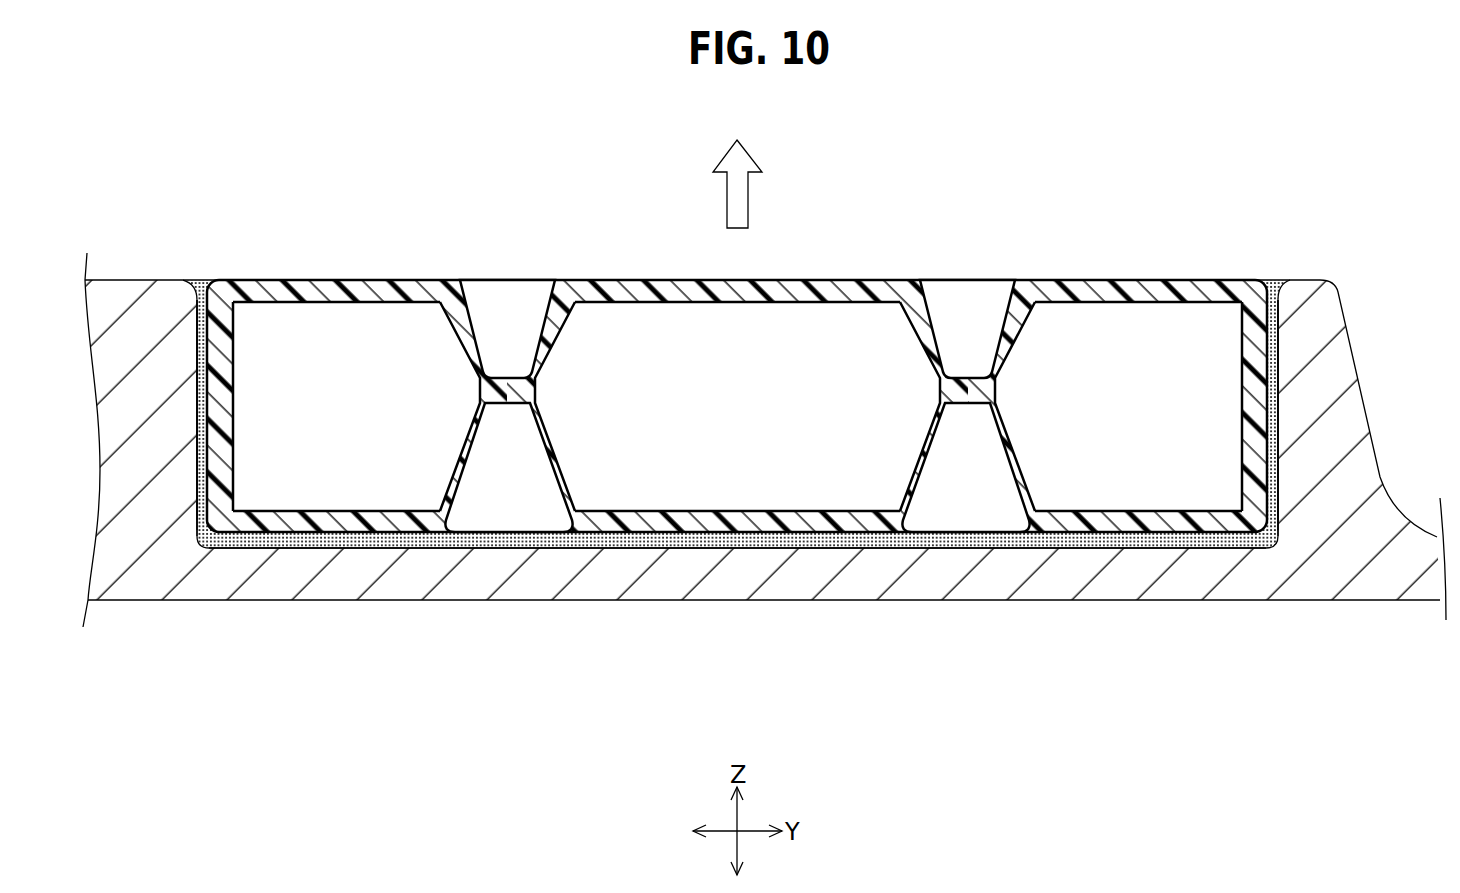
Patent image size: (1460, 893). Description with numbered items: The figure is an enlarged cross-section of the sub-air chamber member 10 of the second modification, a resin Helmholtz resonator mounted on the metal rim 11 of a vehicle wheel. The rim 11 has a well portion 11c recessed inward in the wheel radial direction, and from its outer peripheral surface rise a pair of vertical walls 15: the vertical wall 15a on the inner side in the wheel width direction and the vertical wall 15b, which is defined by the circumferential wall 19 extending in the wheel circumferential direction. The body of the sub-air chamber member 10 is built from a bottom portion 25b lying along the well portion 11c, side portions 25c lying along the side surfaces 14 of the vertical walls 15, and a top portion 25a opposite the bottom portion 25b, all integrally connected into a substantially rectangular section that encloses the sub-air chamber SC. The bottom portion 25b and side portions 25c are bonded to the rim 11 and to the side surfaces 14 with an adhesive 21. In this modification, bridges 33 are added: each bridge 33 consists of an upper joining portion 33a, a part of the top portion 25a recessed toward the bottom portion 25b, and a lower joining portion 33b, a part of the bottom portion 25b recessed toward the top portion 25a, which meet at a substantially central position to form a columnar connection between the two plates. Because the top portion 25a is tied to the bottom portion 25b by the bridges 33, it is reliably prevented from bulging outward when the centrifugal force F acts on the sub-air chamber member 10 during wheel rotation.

The sub-air chamber member 10 is at (1035, 253).
The rim 11 is at (130, 290).
The well portion 11c is at (760, 543).
The side surfaces 14 is at (197, 487).
The vertical walls 15 is at (737, 415).
The vertical wall 15a is at (200, 345).
The vertical wall 15b is at (1270, 347).
The circumferential wall 19 is at (1337, 365).
The adhesive 21 is at (695, 547).
The top portion 25a is at (318, 293).
The bottom portion 25b is at (333, 520).
The side portions 25c is at (220, 412).
The bridge 33 is at (663, 227).
The upper joining portion 33a is at (572, 302).
The lower joining portion 33b is at (567, 470).
The sub-air chamber SC is at (396, 419).
The centrifugal force F is at (747, 147).